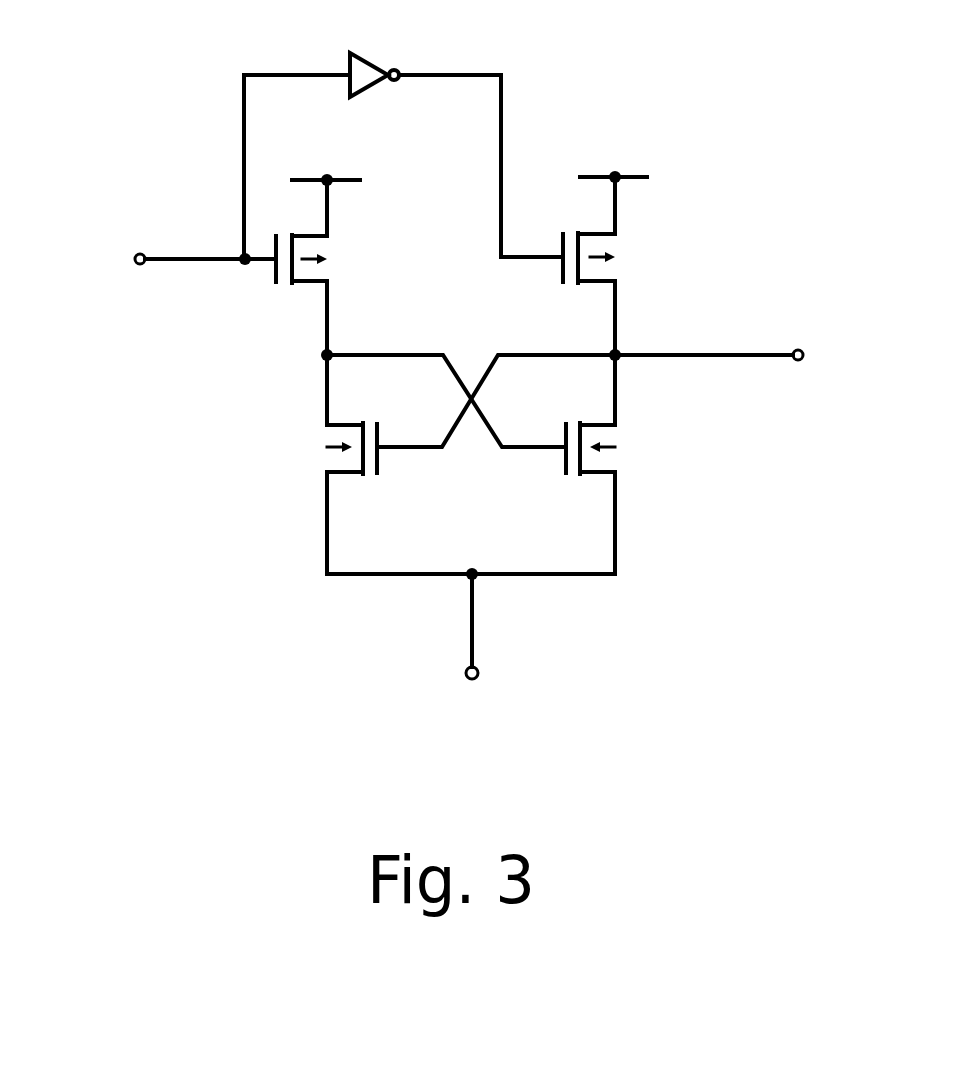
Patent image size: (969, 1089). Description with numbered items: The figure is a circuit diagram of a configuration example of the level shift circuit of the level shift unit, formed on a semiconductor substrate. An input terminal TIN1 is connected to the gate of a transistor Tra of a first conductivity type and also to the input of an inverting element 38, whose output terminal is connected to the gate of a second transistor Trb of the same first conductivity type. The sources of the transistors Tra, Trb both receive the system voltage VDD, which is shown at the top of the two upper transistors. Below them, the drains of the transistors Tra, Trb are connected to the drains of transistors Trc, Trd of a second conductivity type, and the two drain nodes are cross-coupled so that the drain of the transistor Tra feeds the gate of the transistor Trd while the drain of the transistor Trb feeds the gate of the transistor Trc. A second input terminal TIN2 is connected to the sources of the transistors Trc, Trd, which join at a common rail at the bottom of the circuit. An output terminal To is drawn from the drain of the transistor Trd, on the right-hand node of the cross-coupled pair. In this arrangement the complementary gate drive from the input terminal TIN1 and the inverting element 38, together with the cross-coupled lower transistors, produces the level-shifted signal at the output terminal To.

The inverting element 38 is at (371, 63).
The input terminal TIN1 is at (156, 260).
The input terminal TIN2 is at (471, 651).
The output terminal To is at (757, 355).
The system voltage VDD is at (508, 180).
The transistor Tra is at (342, 267).
The transistor Trb is at (628, 266).
The transistor Trc is at (368, 464).
The transistor Trd is at (629, 498).